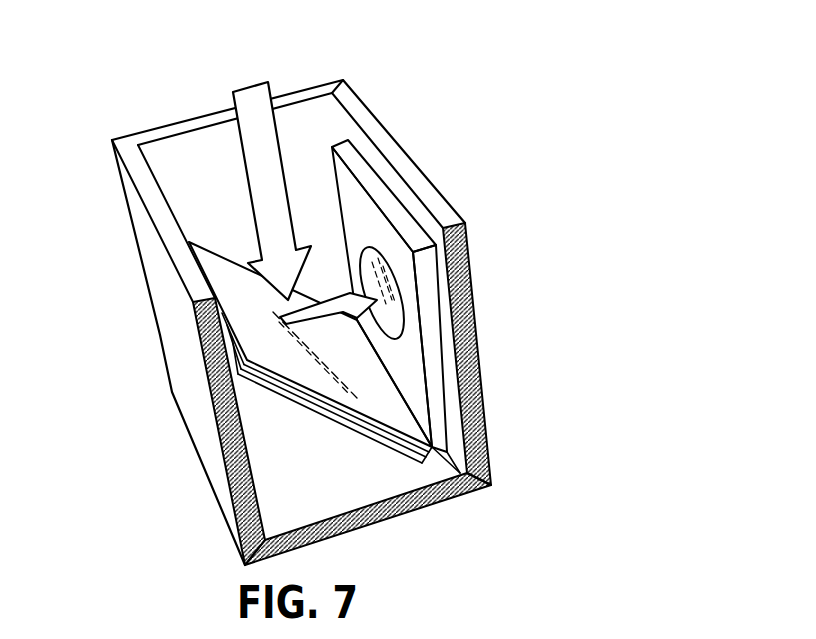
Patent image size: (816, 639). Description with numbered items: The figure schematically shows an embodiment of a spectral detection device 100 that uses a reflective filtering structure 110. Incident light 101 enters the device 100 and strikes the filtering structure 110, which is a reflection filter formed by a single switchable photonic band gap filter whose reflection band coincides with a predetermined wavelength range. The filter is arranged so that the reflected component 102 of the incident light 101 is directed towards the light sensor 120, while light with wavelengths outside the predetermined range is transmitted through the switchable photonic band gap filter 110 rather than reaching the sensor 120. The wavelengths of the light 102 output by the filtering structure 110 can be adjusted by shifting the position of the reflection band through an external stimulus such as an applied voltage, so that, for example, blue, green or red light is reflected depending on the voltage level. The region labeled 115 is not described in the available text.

The spectral detection device 100 is at (503, 271).
The incident light 101 is at (250, 146).
The reflected light component 102 is at (319, 314).
The filtering structure 110 is at (239, 298).
The housing cavity 115 is at (306, 121).
The light sensor 120 is at (372, 226).